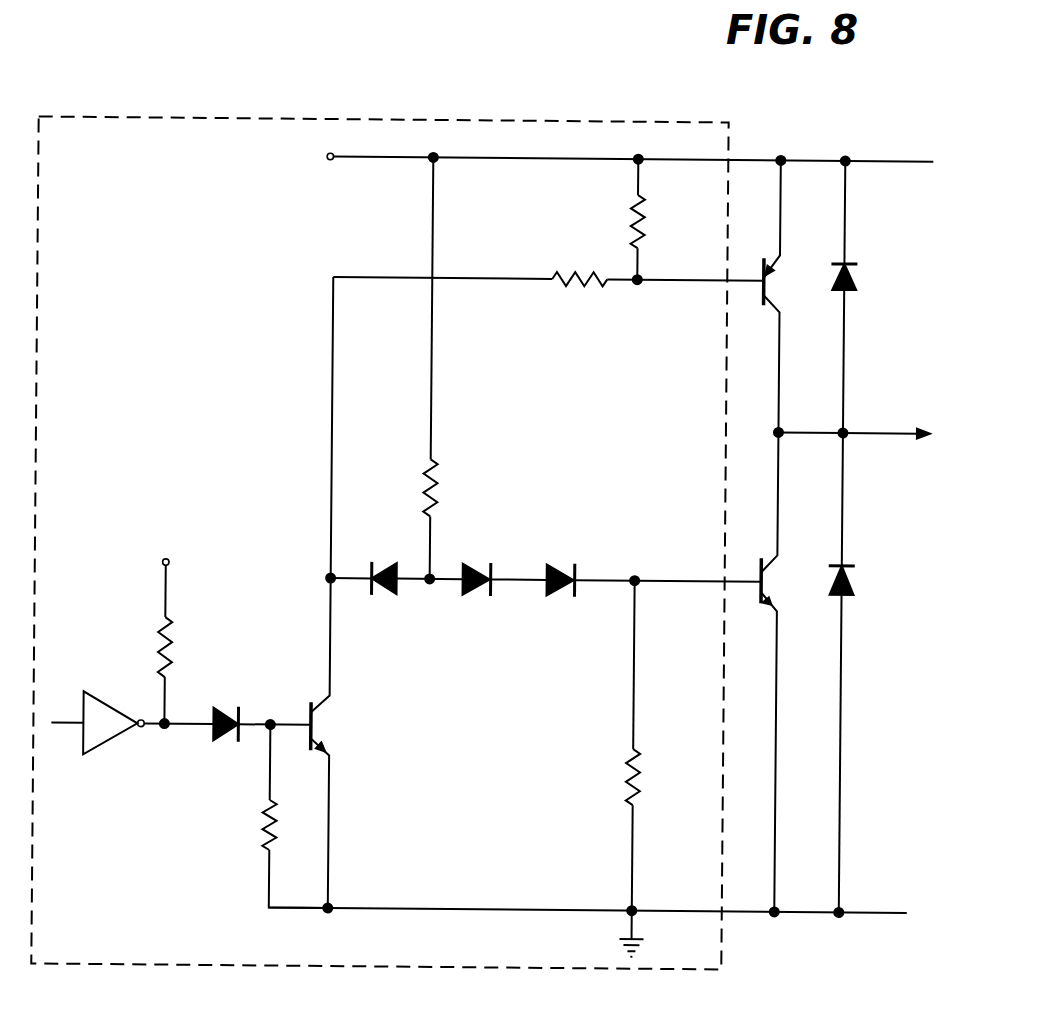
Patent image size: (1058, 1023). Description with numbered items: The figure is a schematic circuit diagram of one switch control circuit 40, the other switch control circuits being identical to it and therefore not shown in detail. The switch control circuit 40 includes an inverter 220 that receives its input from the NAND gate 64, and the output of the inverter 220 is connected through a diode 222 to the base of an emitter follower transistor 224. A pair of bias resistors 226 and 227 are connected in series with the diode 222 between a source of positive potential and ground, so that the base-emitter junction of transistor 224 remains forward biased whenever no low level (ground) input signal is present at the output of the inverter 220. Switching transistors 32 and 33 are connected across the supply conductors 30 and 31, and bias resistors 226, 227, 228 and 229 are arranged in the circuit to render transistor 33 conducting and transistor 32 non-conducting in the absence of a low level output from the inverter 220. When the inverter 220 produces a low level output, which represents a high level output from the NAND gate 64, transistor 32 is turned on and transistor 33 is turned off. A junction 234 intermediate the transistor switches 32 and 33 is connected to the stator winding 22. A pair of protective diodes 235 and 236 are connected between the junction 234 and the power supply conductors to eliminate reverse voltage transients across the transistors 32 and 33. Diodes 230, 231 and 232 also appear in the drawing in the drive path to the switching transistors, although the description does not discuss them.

The switch control circuit 40 is at (727, 125).
The supply conductor 30 is at (390, 160).
The supply conductor 31 is at (450, 908).
The bias resistor 226 is at (631, 195).
The bias resistor 227 is at (582, 288).
The bias resistor 228 is at (437, 460).
The bias resistor 229 is at (628, 768).
The inverter 220 is at (97, 695).
The diode 222 is at (233, 712).
The emitter follower transistor 224 is at (336, 726).
The diode 230 is at (478, 592).
The diode 231 is at (567, 592).
The diode 232 is at (390, 563).
The switching transistor 32 is at (773, 283).
The switching transistor 33 is at (781, 583).
The junction 234 is at (779, 430).
The protective diode 235 is at (856, 281).
The protective diode 236 is at (855, 585).
The stator winding 22 is at (892, 438).
The NAND gate 64 is at (130, 795).